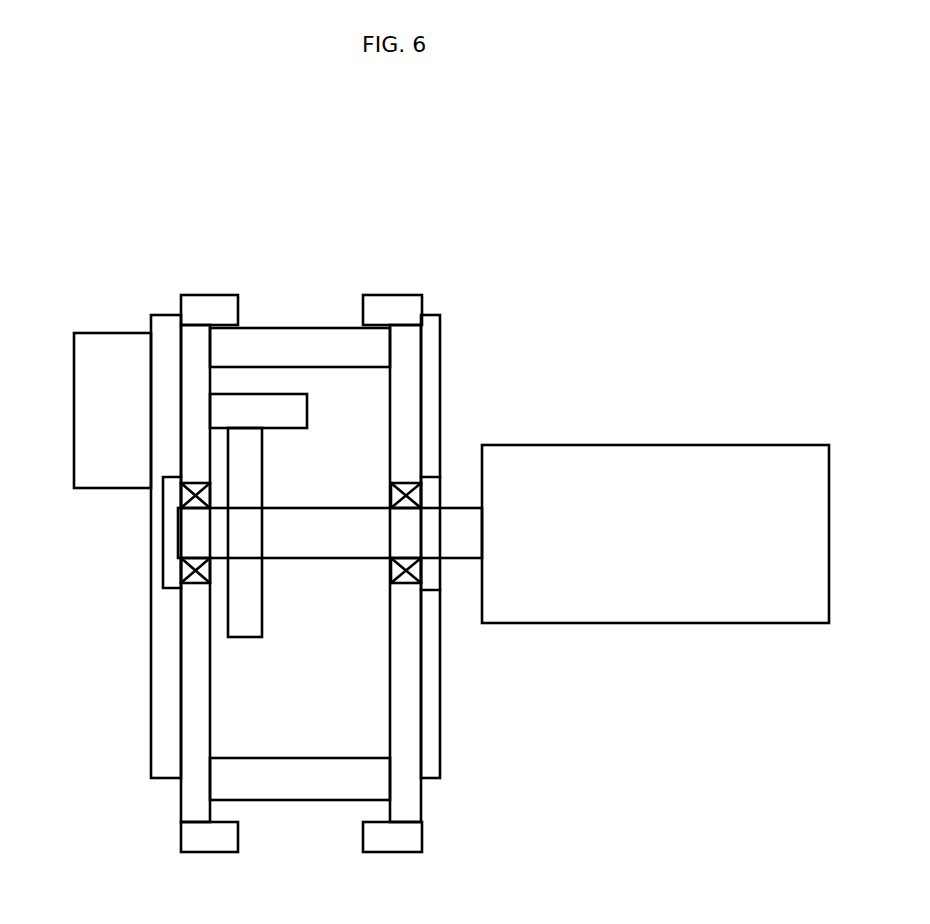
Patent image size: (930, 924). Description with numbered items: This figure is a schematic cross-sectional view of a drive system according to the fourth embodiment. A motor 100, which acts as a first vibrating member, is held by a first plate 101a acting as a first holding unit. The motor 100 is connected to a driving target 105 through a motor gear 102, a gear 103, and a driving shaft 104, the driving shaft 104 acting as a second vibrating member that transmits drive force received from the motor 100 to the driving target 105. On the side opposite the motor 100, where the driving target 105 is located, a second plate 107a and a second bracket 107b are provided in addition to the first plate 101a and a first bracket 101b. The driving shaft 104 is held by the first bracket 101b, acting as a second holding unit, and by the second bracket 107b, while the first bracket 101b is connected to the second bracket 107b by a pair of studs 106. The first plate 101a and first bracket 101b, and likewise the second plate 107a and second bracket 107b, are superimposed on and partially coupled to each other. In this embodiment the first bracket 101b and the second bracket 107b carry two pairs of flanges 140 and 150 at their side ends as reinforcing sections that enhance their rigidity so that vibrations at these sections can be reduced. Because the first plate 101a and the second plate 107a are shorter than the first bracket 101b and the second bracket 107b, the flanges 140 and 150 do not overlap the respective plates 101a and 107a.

The motor 100 is at (88, 413).
The first plate 101a is at (163, 708).
The first bracket 101b is at (195, 723).
The motor gear 102 is at (288, 412).
The gear 103 is at (242, 615).
The driving shaft 104 is at (313, 523).
The driving target 105 is at (653, 453).
The studs 106 is at (303, 341).
The second plate 107a is at (427, 718).
The second bracket 107b is at (407, 385).
The flanges 140 is at (210, 302).
The flanges 150 is at (398, 302).